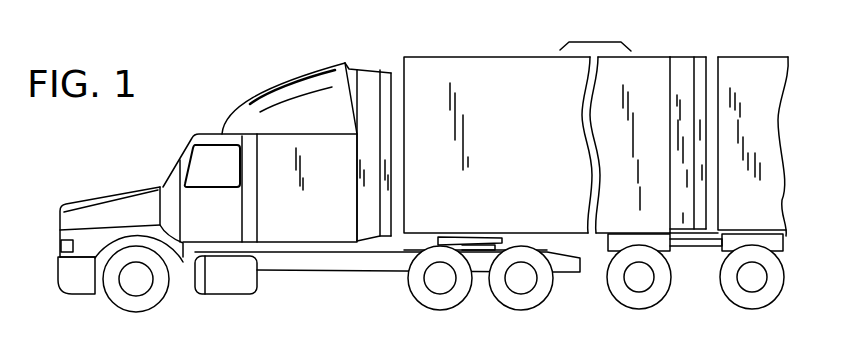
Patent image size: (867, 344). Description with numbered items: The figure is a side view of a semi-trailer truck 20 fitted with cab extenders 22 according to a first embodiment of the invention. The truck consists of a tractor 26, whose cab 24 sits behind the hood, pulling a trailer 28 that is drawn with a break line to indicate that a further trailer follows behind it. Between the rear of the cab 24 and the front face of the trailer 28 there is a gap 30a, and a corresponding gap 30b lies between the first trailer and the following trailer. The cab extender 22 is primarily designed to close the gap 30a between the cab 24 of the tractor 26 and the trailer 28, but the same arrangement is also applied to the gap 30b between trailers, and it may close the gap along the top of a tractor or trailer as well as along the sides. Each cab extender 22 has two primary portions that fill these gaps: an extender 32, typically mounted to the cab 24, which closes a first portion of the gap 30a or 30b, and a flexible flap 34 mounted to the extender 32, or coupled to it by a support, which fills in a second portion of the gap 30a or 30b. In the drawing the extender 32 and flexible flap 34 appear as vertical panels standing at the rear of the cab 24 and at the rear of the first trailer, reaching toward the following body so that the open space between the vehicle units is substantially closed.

The semi-trailer truck 20 is at (320, 285).
The cab extender 22 is at (368, 256).
The cab 24 is at (282, 244).
The tractor 26 is at (112, 193).
The trailer 28 is at (467, 57).
The gap 30a is at (378, 55).
The gap 30b is at (675, 41).
The extender 32 is at (355, 68).
The flexible flap 34 is at (384, 241).